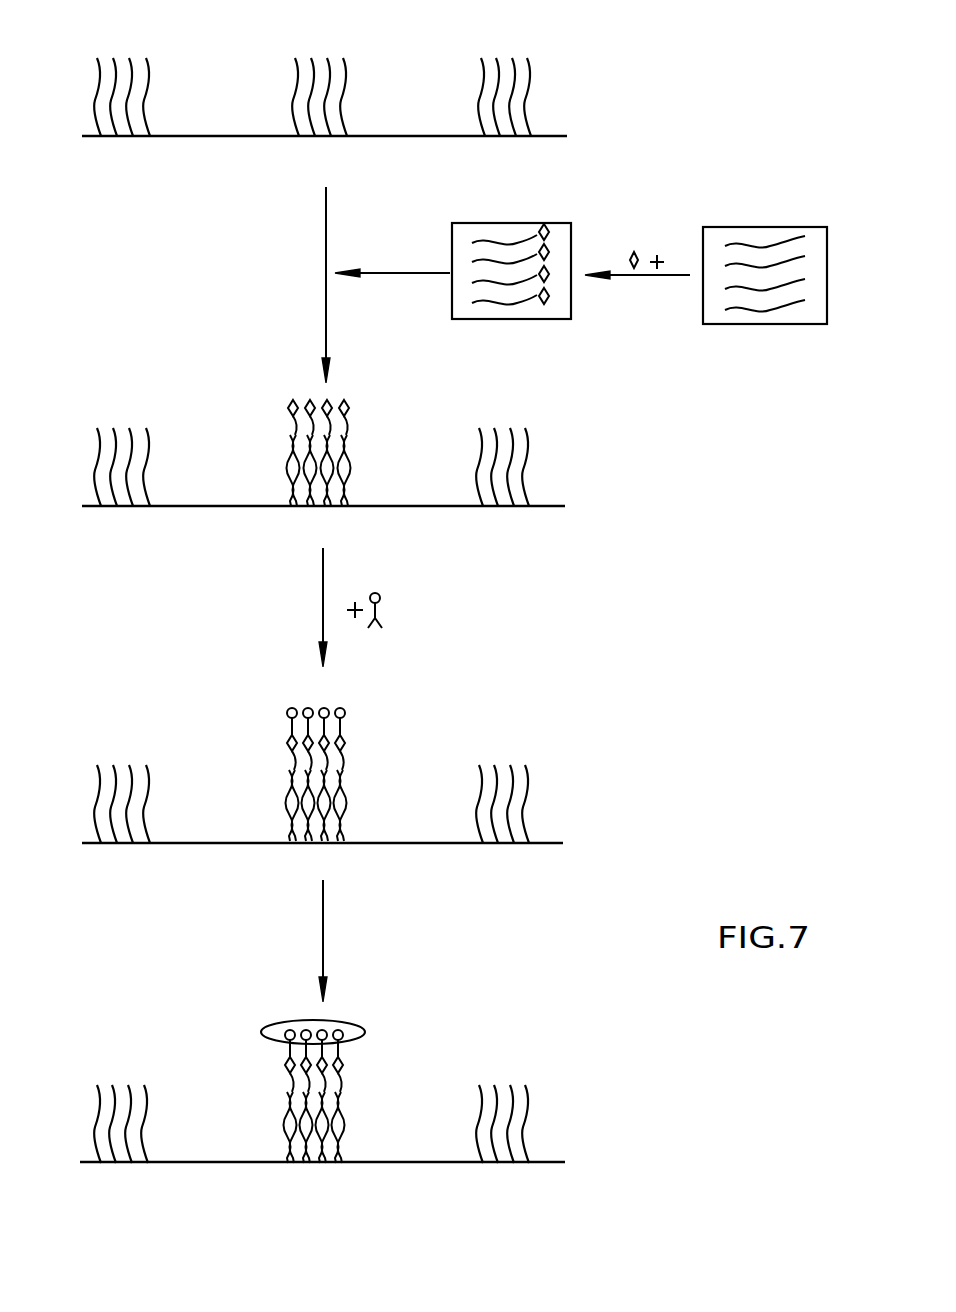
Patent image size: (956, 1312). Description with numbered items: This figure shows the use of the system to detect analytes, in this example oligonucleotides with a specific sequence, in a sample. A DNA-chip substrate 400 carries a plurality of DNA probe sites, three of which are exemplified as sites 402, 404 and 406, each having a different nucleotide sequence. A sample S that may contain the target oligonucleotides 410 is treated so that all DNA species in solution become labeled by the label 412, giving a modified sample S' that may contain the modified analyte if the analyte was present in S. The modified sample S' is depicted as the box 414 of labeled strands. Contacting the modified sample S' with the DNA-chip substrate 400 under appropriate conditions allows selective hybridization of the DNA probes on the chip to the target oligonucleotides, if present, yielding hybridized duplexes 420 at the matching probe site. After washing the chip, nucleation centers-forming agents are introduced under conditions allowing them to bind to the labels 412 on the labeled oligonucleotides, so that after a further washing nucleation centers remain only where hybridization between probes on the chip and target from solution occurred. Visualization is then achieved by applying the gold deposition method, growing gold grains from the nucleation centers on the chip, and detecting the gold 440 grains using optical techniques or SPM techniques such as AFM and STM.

The DNA-chip substrate 400 is at (158, 143).
The DNA probe site 402 is at (127, 62).
The DNA probe site 404 is at (320, 63).
The DNA probe site 406 is at (506, 63).
The target oligonucleotides 410 is at (750, 305).
The label 412 is at (633, 250).
The labeled target nucleic acids S' 414 is at (500, 302).
The hybridized labeled targets on capture probes 420 is at (375, 428).
The gold grains 440 is at (347, 1021).